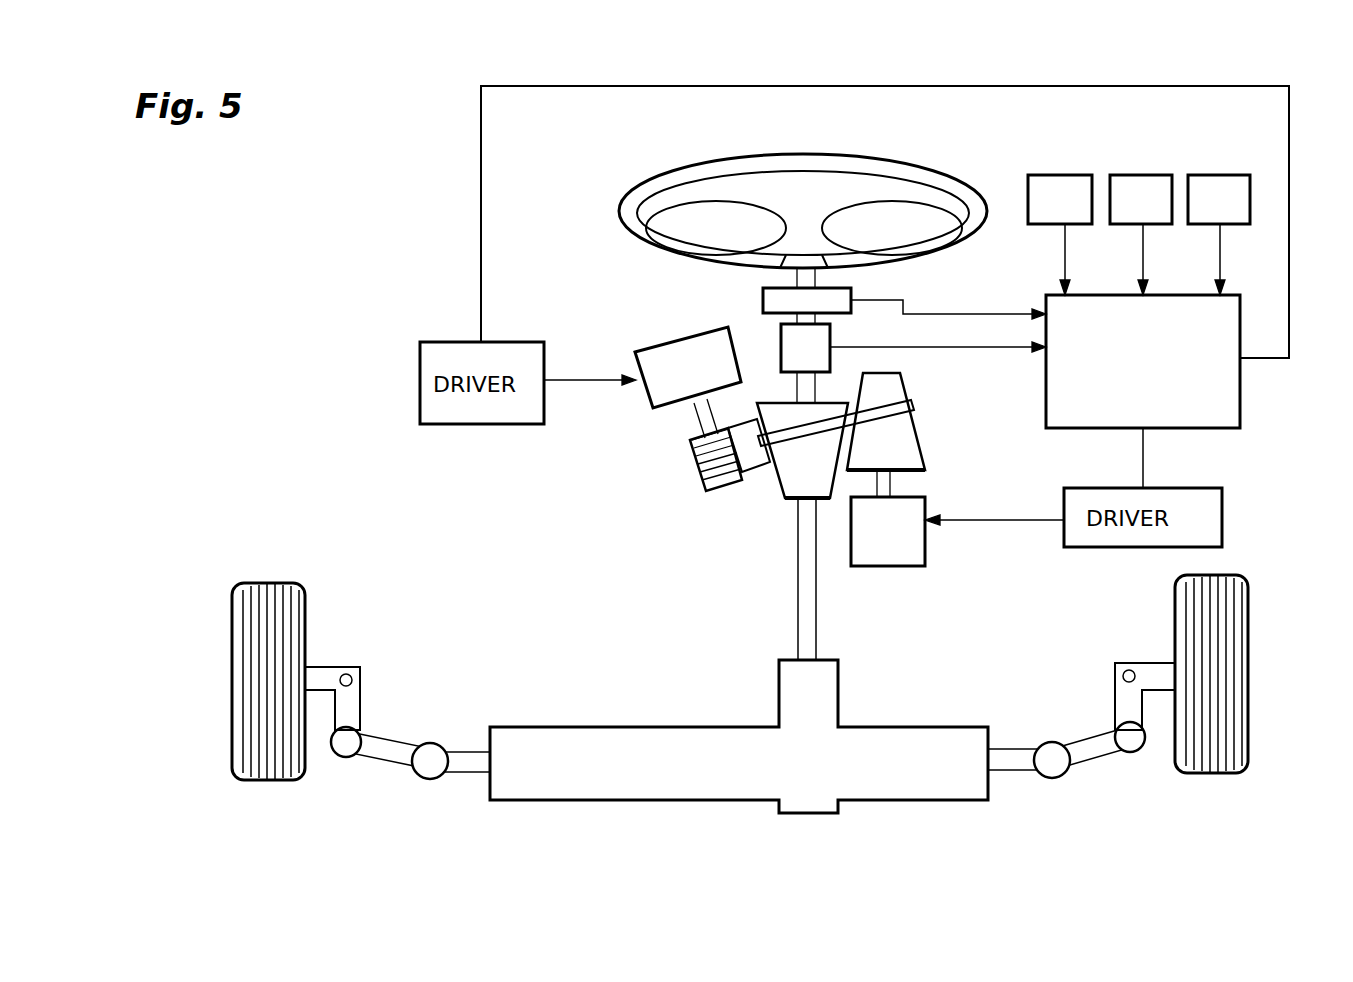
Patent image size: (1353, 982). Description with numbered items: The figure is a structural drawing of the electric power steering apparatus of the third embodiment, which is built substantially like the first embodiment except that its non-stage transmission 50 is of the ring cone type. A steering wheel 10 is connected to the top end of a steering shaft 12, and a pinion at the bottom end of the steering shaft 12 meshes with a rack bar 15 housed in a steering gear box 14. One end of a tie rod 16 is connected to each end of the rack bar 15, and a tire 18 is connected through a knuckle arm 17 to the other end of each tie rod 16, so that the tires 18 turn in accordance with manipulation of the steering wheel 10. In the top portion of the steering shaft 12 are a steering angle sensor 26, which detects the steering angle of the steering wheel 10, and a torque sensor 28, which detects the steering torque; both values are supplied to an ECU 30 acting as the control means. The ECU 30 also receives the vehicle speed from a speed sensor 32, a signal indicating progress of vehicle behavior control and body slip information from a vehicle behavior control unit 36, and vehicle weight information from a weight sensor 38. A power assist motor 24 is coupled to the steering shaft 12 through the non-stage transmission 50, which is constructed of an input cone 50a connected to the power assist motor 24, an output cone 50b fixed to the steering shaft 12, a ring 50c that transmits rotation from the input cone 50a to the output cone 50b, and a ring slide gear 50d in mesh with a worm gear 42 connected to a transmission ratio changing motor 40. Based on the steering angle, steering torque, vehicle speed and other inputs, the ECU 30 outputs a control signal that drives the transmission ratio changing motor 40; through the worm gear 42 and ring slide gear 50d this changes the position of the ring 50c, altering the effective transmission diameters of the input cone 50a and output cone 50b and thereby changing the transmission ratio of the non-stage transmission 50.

The steering wheel 10 is at (650, 190).
The steering shaft 12 is at (812, 278).
The steering gear box 14 is at (886, 802).
The rack bar 15 is at (473, 778).
The tie rod 16 is at (386, 760).
The knuckle arm 17 is at (363, 685).
The tire 18 is at (255, 782).
The power assist motor 24 is at (910, 508).
The steering angle sensor 26 is at (765, 300).
The torque sensor 28 is at (790, 347).
The ECU 30 is at (1243, 382).
The speed sensor 32 is at (1063, 180).
The vehicle behavior control unit 36 is at (1148, 180).
The weight sensor 38 is at (1228, 180).
The transmission ratio changing motor 40 is at (655, 404).
The worm gear 42 is at (706, 476).
The non-stage transmission 50 is at (780, 522).
The input cone 50a is at (908, 455).
The output cone 50b is at (790, 475).
The ring 50c is at (912, 410).
The ring slide gear 50d is at (750, 430).